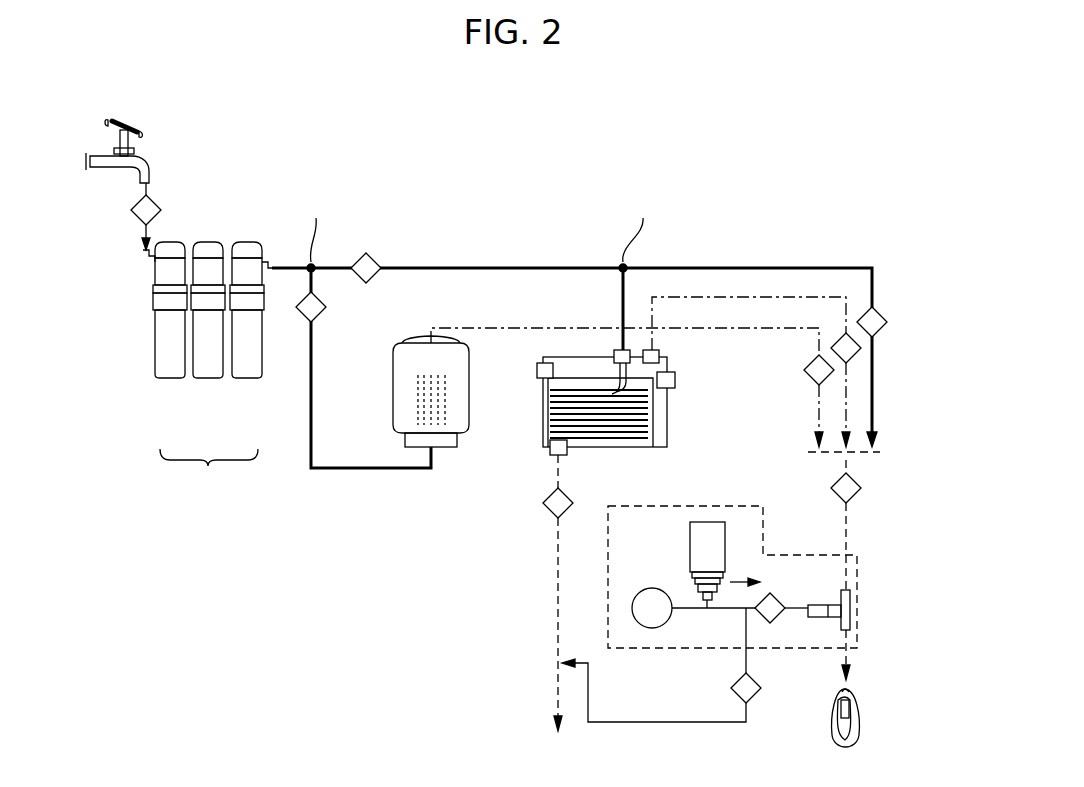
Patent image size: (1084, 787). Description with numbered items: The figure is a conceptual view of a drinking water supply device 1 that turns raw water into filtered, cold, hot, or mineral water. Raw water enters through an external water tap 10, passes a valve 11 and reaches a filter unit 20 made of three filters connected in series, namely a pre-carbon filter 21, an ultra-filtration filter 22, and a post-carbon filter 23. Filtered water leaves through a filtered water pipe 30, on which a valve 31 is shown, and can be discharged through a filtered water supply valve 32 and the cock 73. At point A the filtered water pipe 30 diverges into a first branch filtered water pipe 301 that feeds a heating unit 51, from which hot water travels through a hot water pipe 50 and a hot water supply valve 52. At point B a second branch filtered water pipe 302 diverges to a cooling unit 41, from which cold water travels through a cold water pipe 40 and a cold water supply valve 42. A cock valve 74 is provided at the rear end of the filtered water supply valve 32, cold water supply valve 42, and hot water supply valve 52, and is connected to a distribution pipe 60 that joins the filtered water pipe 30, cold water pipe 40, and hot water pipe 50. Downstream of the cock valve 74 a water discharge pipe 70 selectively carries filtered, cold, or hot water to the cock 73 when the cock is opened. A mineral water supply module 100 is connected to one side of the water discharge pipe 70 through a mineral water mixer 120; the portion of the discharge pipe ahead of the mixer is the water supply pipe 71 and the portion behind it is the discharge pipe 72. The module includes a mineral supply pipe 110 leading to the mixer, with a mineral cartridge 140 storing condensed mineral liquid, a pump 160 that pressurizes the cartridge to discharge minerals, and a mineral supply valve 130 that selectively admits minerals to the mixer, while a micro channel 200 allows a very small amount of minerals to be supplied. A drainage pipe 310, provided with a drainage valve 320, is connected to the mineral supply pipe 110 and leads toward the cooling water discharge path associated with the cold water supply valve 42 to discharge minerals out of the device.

The drinking water supply device 1 is at (735, 155).
The external water tap 10 is at (150, 162).
The water supply valve 11 is at (152, 200).
The filter unit 20 is at (209, 467).
The pre-carbon filter 21 is at (168, 378).
The ultra-filtration (UF) filter 22 is at (208, 378).
The post-carbon filter 23 is at (248, 378).
The filtered water pipe 30 is at (540, 258).
The purified water valve 31 is at (366, 252).
The filtered water supply valve 32 is at (878, 308).
The first branch filtered water pipe 301 is at (370, 470).
The second branch filtered water pipe 302 is at (626, 293).
The cold water pipe 40 is at (720, 285).
The cooling unit 41 is at (667, 405).
The cold water supply valve 42 is at (860, 348).
The hot water pipe 50 is at (571, 318).
The heating unit 51 is at (469, 400).
The hot water supply valve 52 is at (804, 368).
The distribution pipe 60 is at (882, 452).
The water discharge pipe 70 is at (905, 533).
The water supply pipe 71 is at (848, 535).
The discharge pipe 72 is at (848, 636).
The cock 73 is at (858, 718).
The cock valve 74 is at (861, 488).
The mineral water supply module 100 is at (634, 500).
The mineral supply pipe 110 is at (722, 612).
The mineral water mixer 120 is at (840, 598).
The mineral supply valve 130 is at (772, 592).
The mineral cartridge 140 is at (707, 522).
The pump 160 is at (650, 628).
The micro channel 200 is at (820, 617).
The drainage pipe 310 is at (756, 676).
The drainage valve 320 is at (750, 705).